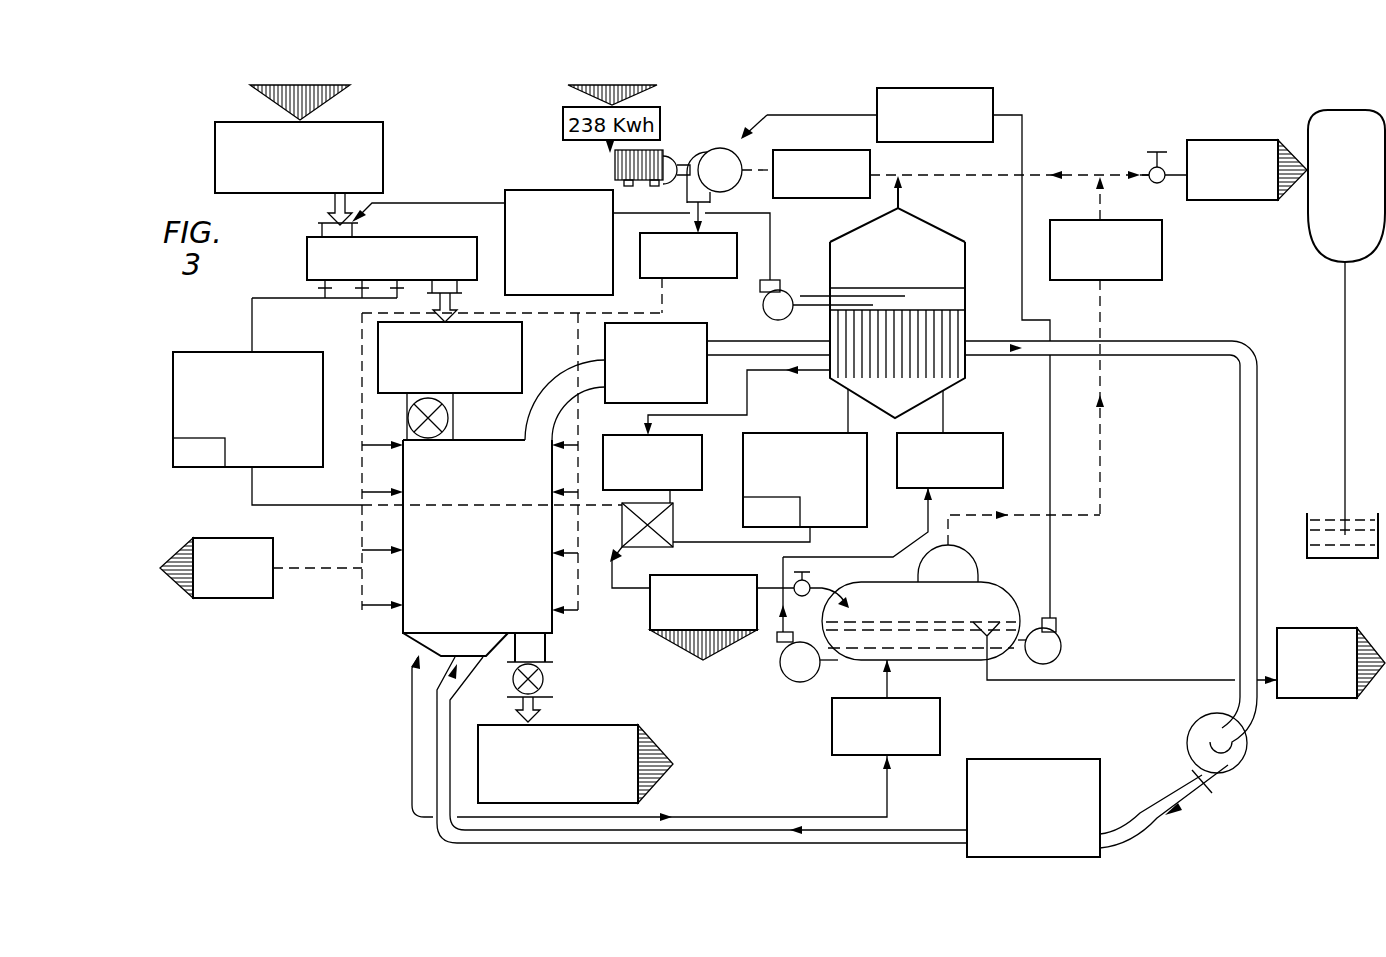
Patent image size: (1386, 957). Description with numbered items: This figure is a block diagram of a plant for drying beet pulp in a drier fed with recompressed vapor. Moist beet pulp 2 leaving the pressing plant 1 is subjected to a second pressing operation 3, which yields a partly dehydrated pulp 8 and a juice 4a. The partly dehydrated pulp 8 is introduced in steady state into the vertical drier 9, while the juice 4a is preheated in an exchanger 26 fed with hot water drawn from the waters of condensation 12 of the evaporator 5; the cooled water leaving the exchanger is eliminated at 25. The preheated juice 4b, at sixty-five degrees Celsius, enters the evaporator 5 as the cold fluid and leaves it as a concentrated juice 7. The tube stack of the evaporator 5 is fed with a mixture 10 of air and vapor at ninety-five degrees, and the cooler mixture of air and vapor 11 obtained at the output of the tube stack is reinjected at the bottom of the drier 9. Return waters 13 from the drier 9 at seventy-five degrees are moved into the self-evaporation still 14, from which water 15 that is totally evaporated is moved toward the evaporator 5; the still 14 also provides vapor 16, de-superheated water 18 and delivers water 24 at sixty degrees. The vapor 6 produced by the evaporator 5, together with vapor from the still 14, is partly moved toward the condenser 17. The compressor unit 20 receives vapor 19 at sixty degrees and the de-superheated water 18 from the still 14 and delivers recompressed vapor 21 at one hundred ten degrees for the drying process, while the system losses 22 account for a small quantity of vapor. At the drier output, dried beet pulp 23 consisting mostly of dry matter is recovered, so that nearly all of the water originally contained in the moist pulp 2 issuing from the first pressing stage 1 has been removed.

The pressing plant 1 is at (335, 95).
The pulp of beets 2 is at (383, 150).
The second pressing operation 3 is at (425, 237).
The juice 4a is at (210, 352).
The preheated juice 4b is at (808, 433).
The evaporator 5 is at (965, 282).
The vapor 6 is at (928, 236).
The concentrated juice 7 is at (555, 190).
The partly dehydrated pulp 8 is at (522, 365).
The vertical drier 9 is at (403, 470).
The mixture of air and vapor 10 is at (615, 403).
The mixture of air and vapor 11 is at (1050, 759).
The waters of condensation 12 is at (702, 470).
The return waters 13 is at (832, 735).
The self-evaporation still 14 is at (995, 583).
The water 15 is at (980, 433).
The vapor 16 is at (1162, 252).
The condenser 17 is at (1305, 142).
The de-superheated water 18 is at (993, 100).
The vapor 19 is at (822, 150).
The compressor unit 20 is at (665, 156).
The vapor 21 is at (737, 255).
The system losses 22 is at (222, 538).
The beet pulp 23 is at (600, 725).
The water 24 is at (1313, 628).
The water elimination 25 is at (650, 615).
The exchanger 26 is at (673, 512).